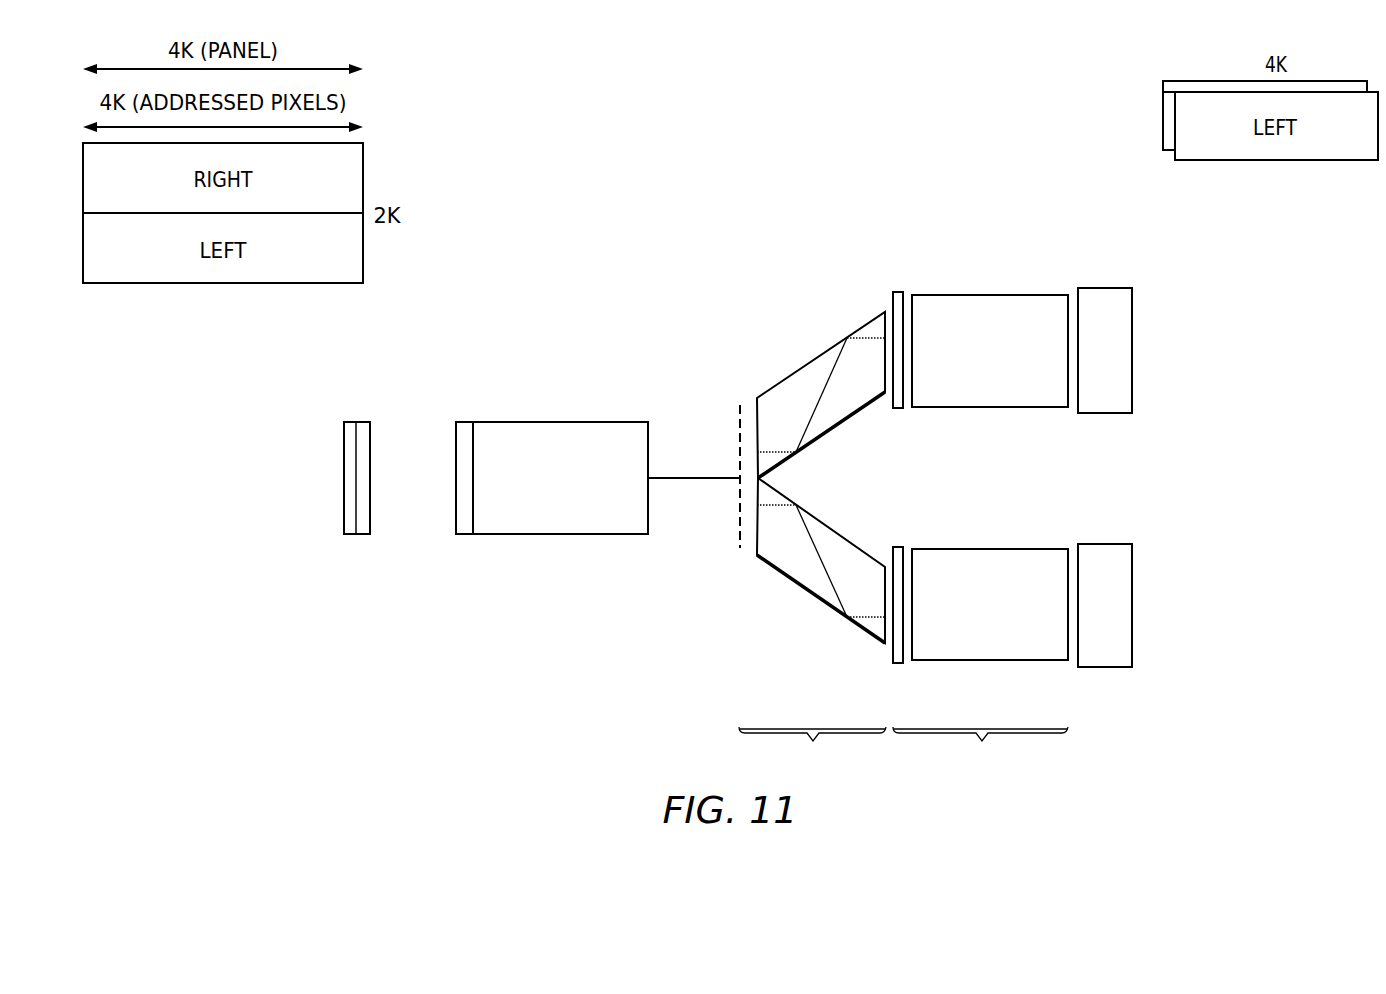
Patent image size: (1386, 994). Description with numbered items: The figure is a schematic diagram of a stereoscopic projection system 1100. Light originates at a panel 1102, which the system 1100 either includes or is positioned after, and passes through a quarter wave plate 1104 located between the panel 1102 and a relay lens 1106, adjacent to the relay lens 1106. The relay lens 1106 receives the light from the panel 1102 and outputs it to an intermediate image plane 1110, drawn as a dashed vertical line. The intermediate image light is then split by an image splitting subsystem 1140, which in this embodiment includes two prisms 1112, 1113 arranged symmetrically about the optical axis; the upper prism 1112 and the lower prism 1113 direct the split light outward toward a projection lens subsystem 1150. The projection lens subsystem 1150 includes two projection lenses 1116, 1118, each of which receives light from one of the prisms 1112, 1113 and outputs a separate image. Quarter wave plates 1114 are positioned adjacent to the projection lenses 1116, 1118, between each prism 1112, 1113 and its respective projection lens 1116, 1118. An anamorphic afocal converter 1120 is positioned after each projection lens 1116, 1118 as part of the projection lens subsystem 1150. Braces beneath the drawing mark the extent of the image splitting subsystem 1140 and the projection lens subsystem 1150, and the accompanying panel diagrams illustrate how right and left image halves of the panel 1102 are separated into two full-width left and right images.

The stereoscopic projection system 1100 is at (358, 648).
The panel 1102 is at (344, 465).
The quarter wave plate 1104 is at (456, 437).
The relay lens 1106 is at (527, 492).
The intermediate image plane 1110 is at (740, 405).
The prism 1112 is at (820, 360).
The prism 1113 is at (800, 585).
The quarter wave plate 1114 is at (900, 291).
The projection lens 1116 is at (960, 365).
The projection lens 1118 is at (960, 619).
The anamorphic afocal converter 1120 is at (1132, 330).
The image splitting subsystem 1140 is at (812, 752).
The projection lens subsystem 1150 is at (980, 752).